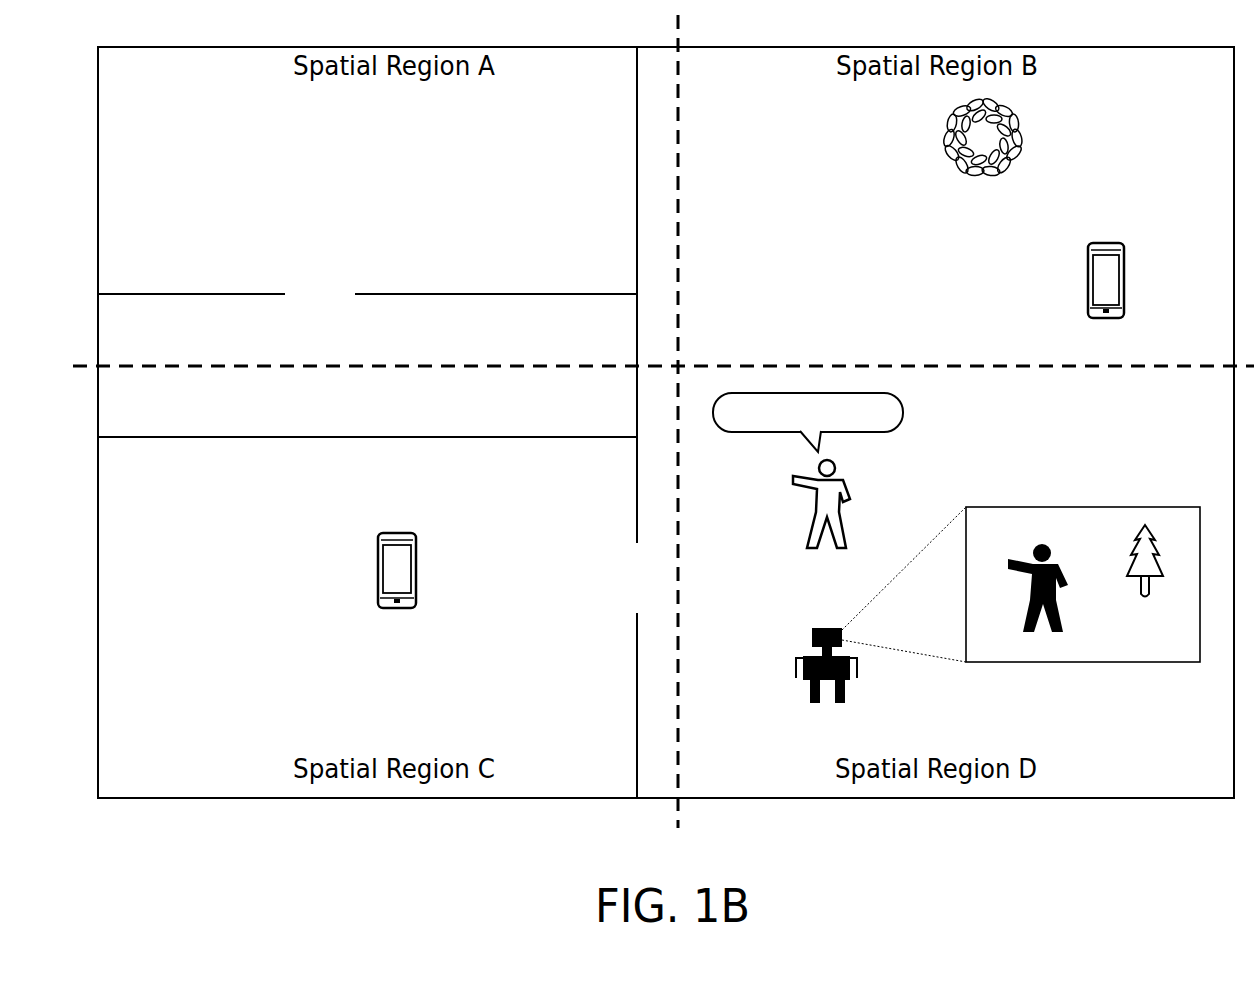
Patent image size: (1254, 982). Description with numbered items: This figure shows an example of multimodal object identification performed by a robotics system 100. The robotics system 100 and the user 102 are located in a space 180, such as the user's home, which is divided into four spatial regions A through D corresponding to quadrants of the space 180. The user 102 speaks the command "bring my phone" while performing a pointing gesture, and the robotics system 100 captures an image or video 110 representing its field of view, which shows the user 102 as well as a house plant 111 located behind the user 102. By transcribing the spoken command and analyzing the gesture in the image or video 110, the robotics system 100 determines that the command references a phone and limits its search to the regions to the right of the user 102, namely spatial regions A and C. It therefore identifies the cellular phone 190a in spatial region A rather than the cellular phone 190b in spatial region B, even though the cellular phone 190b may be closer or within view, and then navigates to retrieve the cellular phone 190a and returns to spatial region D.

The space 180 is at (730, 47).
The house plant 111 is at (1024, 130).
The cellular phone 190b is at (1118, 243).
The cellular phone 190a is at (410, 533).
The user 102 is at (900, 516).
The robotics system 100 is at (898, 676).
The image or video 110 is at (1062, 507).